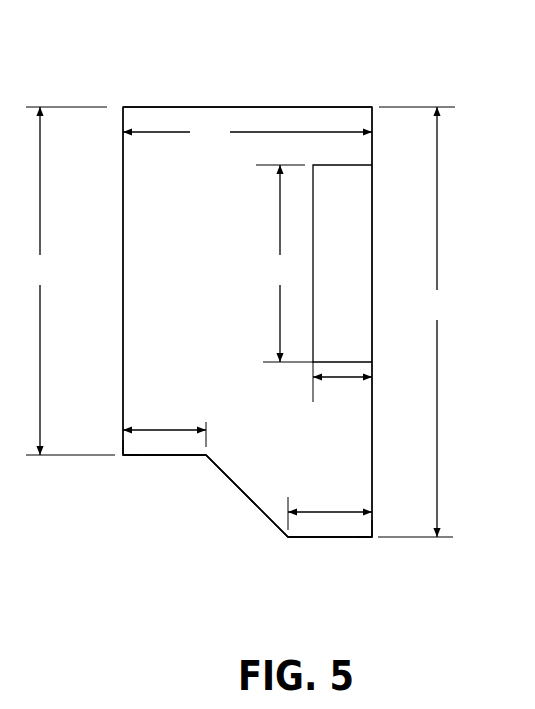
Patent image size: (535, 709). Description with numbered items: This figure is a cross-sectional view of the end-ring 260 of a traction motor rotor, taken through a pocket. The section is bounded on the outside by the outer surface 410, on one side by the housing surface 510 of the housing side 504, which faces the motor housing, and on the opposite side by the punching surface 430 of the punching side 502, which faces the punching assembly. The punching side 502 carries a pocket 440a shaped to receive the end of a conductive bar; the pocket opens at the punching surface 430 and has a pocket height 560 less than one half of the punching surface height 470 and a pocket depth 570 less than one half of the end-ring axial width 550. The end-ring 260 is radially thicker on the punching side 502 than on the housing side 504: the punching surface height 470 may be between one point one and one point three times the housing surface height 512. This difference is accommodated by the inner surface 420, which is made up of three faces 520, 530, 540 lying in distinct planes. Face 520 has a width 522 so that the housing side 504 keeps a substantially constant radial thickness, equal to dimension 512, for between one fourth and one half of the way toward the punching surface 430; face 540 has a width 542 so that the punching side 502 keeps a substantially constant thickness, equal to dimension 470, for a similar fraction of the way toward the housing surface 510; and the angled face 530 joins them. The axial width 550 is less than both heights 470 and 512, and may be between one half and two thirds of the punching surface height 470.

The end-ring 260 is at (355, 65).
The outer surface 410 is at (232, 107).
The housing surface 510 is at (122, 270).
The punching surface 430 is at (373, 420).
The inner surface 420 is at (228, 562).
The face 520 is at (160, 458).
The face 530 is at (265, 525).
The face 540 is at (342, 540).
The pocket 440a is at (340, 212).
The punching side 502 is at (375, 603).
The housing side 504 is at (132, 532).
The housing surface height 512 is at (70, 281).
The end-ring axial width 550 is at (247, 131).
The pocket height 560 is at (284, 263).
The pocket depth 570 is at (342, 385).
The punching surface height 470 is at (416, 322).
The width 522 is at (164, 426).
The width 542 is at (330, 509).